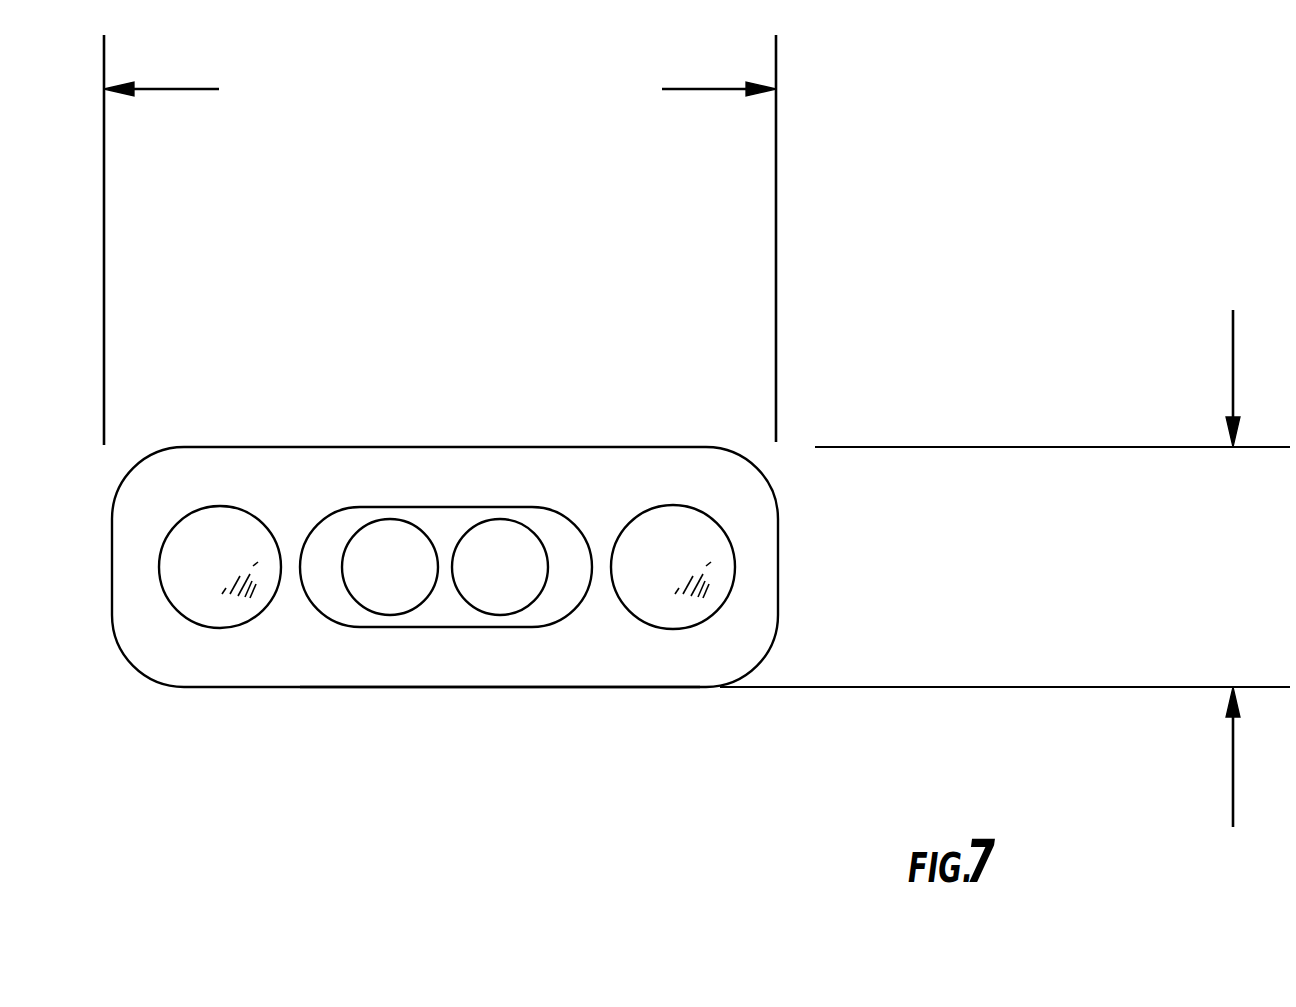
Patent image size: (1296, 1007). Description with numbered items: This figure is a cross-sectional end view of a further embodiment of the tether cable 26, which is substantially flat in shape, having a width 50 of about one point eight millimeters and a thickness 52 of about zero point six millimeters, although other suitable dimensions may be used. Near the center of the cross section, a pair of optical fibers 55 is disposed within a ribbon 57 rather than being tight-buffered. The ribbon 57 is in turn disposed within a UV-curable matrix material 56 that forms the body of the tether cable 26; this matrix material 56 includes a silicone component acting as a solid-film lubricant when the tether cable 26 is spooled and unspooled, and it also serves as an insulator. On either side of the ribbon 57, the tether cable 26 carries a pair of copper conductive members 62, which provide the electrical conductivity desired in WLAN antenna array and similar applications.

The tether cable 26 is at (613, 447).
The width 50 is at (467, 104).
The thickness 52 is at (1247, 586).
The optical fibers 55 is at (390, 520).
The matrix material 56 is at (561, 688).
The ribbon 57 is at (359, 628).
The copper conductive members 62 is at (222, 507).